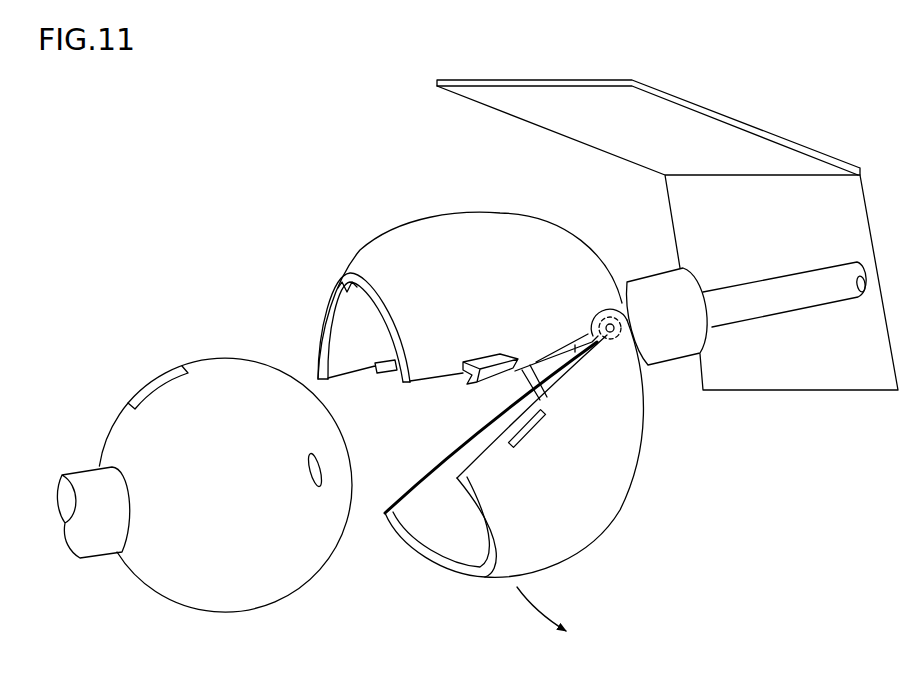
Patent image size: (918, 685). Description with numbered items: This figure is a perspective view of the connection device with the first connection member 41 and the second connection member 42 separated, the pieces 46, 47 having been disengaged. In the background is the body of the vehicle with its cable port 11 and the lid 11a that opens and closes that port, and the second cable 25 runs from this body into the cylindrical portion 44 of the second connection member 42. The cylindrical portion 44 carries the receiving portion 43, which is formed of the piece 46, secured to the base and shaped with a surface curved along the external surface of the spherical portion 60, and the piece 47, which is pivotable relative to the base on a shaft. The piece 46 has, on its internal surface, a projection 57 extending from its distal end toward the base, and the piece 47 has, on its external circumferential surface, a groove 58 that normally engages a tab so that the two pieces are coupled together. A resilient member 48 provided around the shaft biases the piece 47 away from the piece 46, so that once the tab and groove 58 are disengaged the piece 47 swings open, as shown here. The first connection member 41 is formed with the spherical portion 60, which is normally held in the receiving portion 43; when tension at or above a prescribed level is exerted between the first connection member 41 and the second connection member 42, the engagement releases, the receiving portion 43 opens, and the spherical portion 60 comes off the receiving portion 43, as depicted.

The cable port 11 is at (758, 390).
The lid 11a is at (675, 128).
The second cable 25 is at (773, 293).
The first connection member 41 is at (214, 338).
The second connection member 42 is at (393, 170).
The receiving portion 43 is at (376, 225).
The cylindrical portion 44 is at (664, 330).
The piece 46 is at (447, 240).
The piece 47 is at (600, 492).
The resilient member 48 is at (618, 310).
The projection 57 is at (340, 290).
The groove 58 is at (533, 420).
The spherical portion 60 is at (228, 593).